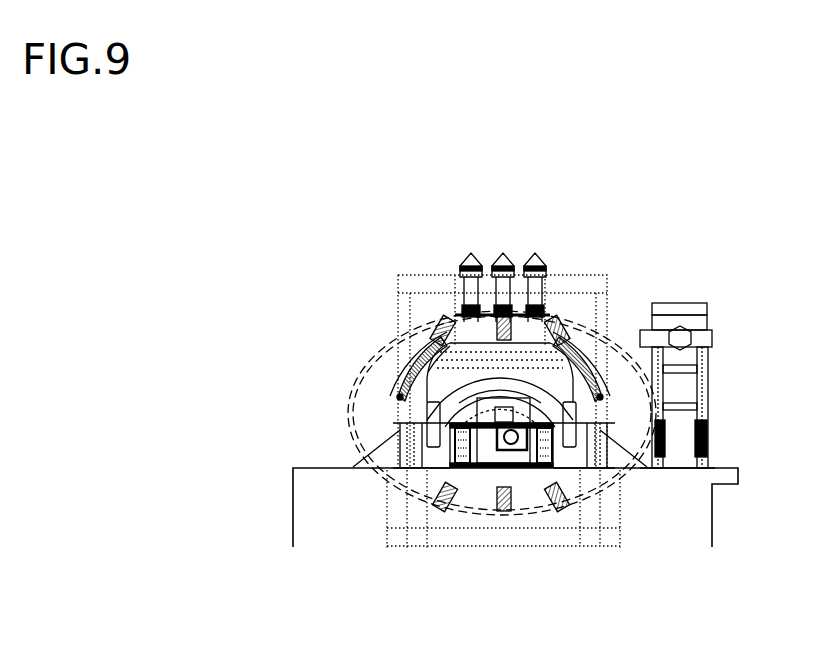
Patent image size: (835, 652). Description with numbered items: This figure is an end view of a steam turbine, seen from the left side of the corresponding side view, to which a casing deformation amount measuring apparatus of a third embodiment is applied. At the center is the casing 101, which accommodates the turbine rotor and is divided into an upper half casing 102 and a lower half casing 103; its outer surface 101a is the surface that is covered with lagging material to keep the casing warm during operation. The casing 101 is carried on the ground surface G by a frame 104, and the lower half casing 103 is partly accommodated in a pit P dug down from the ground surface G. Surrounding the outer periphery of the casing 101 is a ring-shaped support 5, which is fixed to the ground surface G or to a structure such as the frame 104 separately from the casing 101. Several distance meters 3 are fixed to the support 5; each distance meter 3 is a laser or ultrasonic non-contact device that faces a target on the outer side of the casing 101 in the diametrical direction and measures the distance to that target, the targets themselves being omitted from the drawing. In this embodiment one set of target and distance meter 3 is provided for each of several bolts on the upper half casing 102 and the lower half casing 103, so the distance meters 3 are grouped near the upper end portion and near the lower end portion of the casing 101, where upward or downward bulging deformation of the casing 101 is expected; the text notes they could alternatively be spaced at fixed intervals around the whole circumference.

The distance meter 3 is at (441, 318).
The support 5 is at (370, 483).
The casing 101 is at (387, 391).
The outer surface 101a is at (430, 368).
The upper half casing 102 is at (427, 413).
The lower half casing 103 is at (440, 440).
The frame 104 is at (427, 435).
The ground surface G is at (732, 470).
The pit P is at (468, 500).